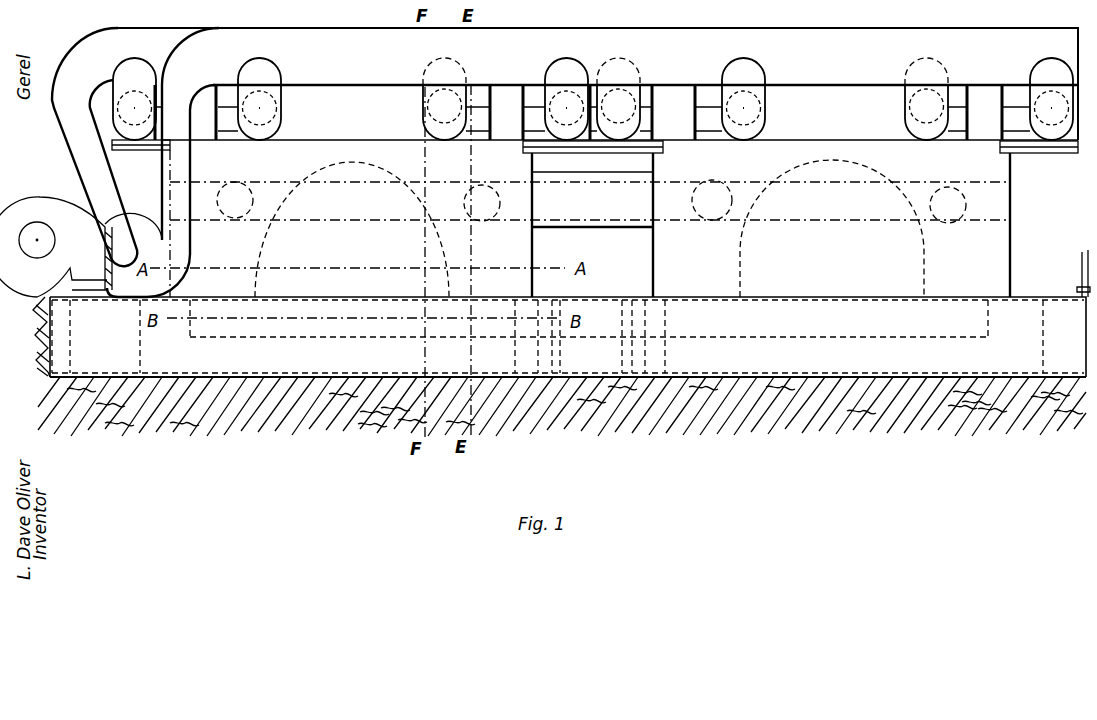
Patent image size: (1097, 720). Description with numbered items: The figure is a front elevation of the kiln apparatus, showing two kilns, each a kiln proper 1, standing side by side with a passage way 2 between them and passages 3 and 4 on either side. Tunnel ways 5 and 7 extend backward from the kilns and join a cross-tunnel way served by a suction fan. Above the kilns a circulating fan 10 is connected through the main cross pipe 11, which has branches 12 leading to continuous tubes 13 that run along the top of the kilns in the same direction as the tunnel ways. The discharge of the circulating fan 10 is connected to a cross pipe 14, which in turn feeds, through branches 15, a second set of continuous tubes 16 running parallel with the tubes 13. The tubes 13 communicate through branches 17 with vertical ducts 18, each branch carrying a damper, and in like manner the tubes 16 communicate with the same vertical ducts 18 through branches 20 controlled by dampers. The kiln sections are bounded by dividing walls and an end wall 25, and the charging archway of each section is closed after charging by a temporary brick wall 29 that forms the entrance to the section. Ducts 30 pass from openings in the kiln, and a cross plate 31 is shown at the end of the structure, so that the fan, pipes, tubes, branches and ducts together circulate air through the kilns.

The kiln proper 1 is at (64, 158).
The passage way 2 is at (637, 163).
The passage 3 is at (1020, 252).
The passage 4 is at (147, 175).
The tunnel way 5 is at (605, 310).
The tunnel way 7 is at (1062, 305).
The circulating fan 10 is at (190, 250).
The main cross pipe 11 is at (288, 31).
The branches 12 is at (281, 100).
The continuous tubes 13 is at (263, 130).
The cross pipe 14 is at (148, 32).
The branches 15 is at (113, 83).
The continuous tubes 16 is at (115, 118).
The branches 17 is at (228, 103).
The vertical ducts 18 is at (652, 104).
The branches 20 is at (163, 110).
The end wall 25 is at (520, 257).
The temporary brick wall 29 is at (625, 97).
The ducts 30 is at (235, 220).
The end bracket 31 is at (1017, 193).